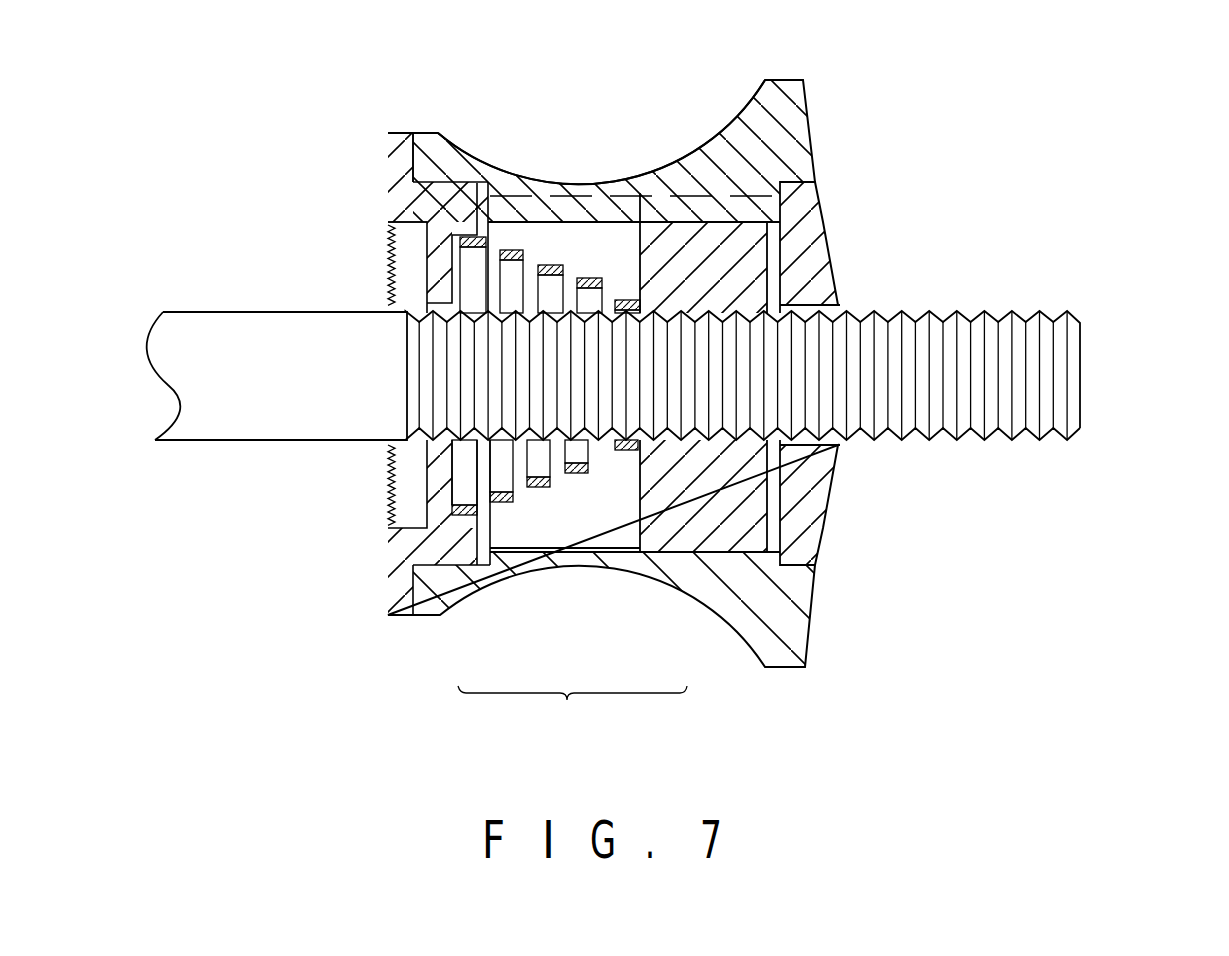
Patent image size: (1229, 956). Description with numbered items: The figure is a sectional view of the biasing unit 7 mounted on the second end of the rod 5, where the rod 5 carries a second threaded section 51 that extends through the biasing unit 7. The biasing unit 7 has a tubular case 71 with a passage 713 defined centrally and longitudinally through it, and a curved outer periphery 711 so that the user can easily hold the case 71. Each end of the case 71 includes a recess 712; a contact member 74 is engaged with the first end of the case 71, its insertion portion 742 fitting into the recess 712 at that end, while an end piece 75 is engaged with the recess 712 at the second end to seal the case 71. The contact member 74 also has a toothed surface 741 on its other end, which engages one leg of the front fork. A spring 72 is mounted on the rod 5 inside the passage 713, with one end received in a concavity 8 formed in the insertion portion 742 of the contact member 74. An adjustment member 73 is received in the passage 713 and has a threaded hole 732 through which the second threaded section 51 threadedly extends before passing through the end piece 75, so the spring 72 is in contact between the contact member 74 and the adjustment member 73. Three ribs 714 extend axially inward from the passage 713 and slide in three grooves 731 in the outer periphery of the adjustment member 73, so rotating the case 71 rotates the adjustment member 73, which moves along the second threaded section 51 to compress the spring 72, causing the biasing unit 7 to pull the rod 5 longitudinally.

The rod 5 is at (187, 332).
The biasing unit 7 is at (572, 712).
The concavity 8 is at (453, 250).
The second threaded section 51 is at (1062, 368).
The tubular case 71 is at (440, 583).
The spring 72 is at (577, 474).
The adjustment member 73 is at (693, 510).
The contact member 74 is at (482, 568).
The end piece 75 is at (783, 566).
The curved outer periphery 711 is at (673, 193).
The recess 712 is at (467, 195).
The passage 713 is at (607, 230).
The ribs 714 is at (548, 210).
The grooves 731 is at (728, 221).
The threaded hole 732 is at (760, 427).
The toothed surface 741 is at (388, 231).
The insertion portion 742 is at (440, 193).